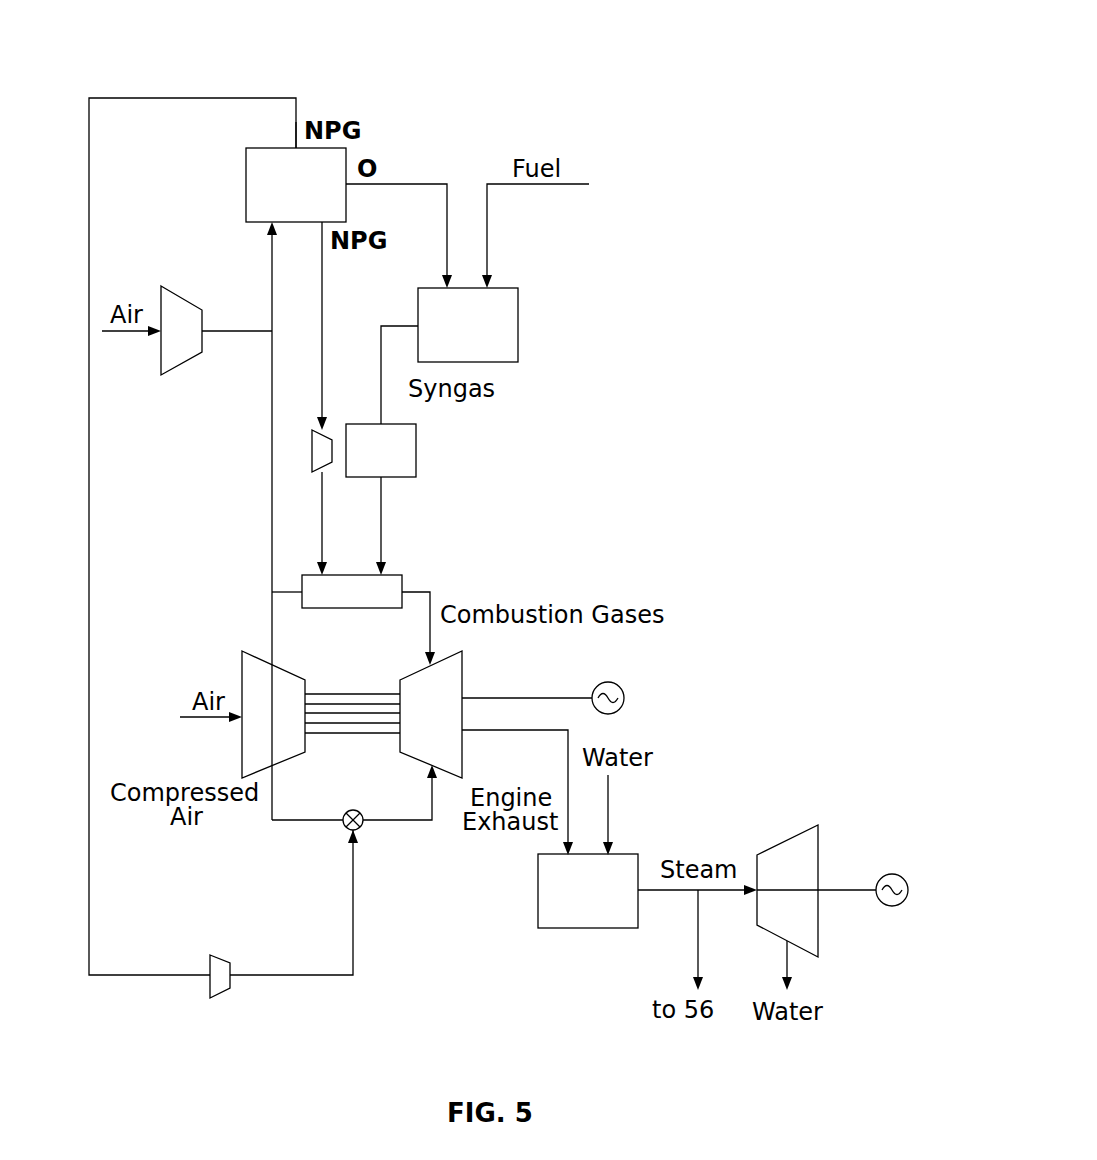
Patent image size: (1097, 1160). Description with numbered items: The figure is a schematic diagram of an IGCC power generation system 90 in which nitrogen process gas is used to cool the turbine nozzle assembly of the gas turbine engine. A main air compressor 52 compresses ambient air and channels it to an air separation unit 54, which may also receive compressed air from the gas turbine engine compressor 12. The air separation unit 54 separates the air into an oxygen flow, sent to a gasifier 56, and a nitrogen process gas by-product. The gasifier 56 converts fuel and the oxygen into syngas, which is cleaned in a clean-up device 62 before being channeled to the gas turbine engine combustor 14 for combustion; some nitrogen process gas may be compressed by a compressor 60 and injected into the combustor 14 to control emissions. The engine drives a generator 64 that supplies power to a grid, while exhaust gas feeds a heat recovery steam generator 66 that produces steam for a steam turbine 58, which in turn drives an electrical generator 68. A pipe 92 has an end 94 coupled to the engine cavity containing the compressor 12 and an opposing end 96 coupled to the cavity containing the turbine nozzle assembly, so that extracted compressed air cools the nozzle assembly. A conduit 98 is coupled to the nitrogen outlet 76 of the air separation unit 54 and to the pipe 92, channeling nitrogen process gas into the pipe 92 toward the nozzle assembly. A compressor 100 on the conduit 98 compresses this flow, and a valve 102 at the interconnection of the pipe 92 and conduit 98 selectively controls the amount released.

The IGCC power generation system 90 is at (657, 42).
The conduit 98 is at (89, 572).
The nitrogen outlet 76 is at (296, 145).
The air separation unit 54 is at (312, 199).
The main air compressor 52 is at (197, 345).
The gasifier 56 is at (484, 339).
The compressor 60 is at (318, 428).
The clean-up device 62 is at (416, 449).
The gas turbine engine combustor 14 is at (368, 605).
The gas turbine engine compressor 12 is at (352, 718).
The end of pipe 94 is at (274, 766).
The opposing end of pipe 96 is at (428, 765).
The pipe 92 is at (388, 822).
The valve 102 is at (346, 832).
The compressor 100 is at (216, 993).
The generator 64 is at (609, 682).
The heat recovery steam generator 66 is at (604, 903).
The steam turbine 58 is at (790, 840).
The electrical generator 68 is at (893, 874).